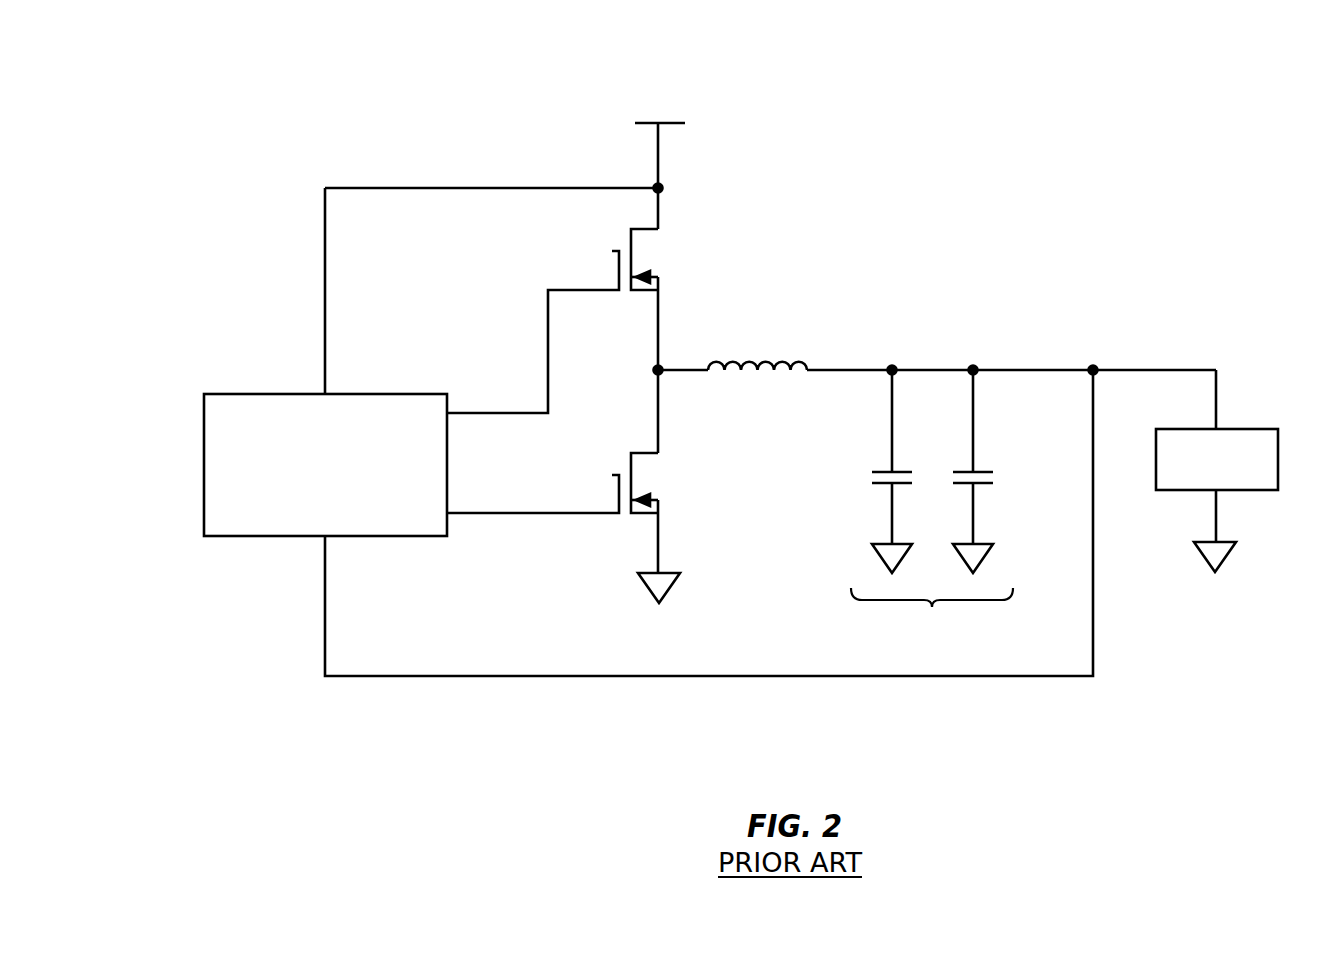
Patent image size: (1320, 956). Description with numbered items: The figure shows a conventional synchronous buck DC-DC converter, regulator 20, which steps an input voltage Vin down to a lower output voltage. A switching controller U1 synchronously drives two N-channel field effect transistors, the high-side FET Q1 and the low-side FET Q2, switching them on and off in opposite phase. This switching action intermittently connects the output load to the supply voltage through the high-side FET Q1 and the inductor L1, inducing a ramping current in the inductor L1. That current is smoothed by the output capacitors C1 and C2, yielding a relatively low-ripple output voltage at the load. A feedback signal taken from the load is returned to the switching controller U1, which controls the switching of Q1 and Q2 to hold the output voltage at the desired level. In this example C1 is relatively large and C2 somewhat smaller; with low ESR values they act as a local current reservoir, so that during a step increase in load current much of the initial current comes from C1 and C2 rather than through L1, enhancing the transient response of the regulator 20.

The regulator 20 is at (760, 358).
The high-side FET Q1 is at (573, 321).
The N-channel field effect transistor Q2 is at (574, 483).
The switching controller U1 is at (325, 465).
The inductor L1 is at (732, 343).
The output capacitor C1 is at (901, 470).
The output capacitor C2 is at (983, 470).